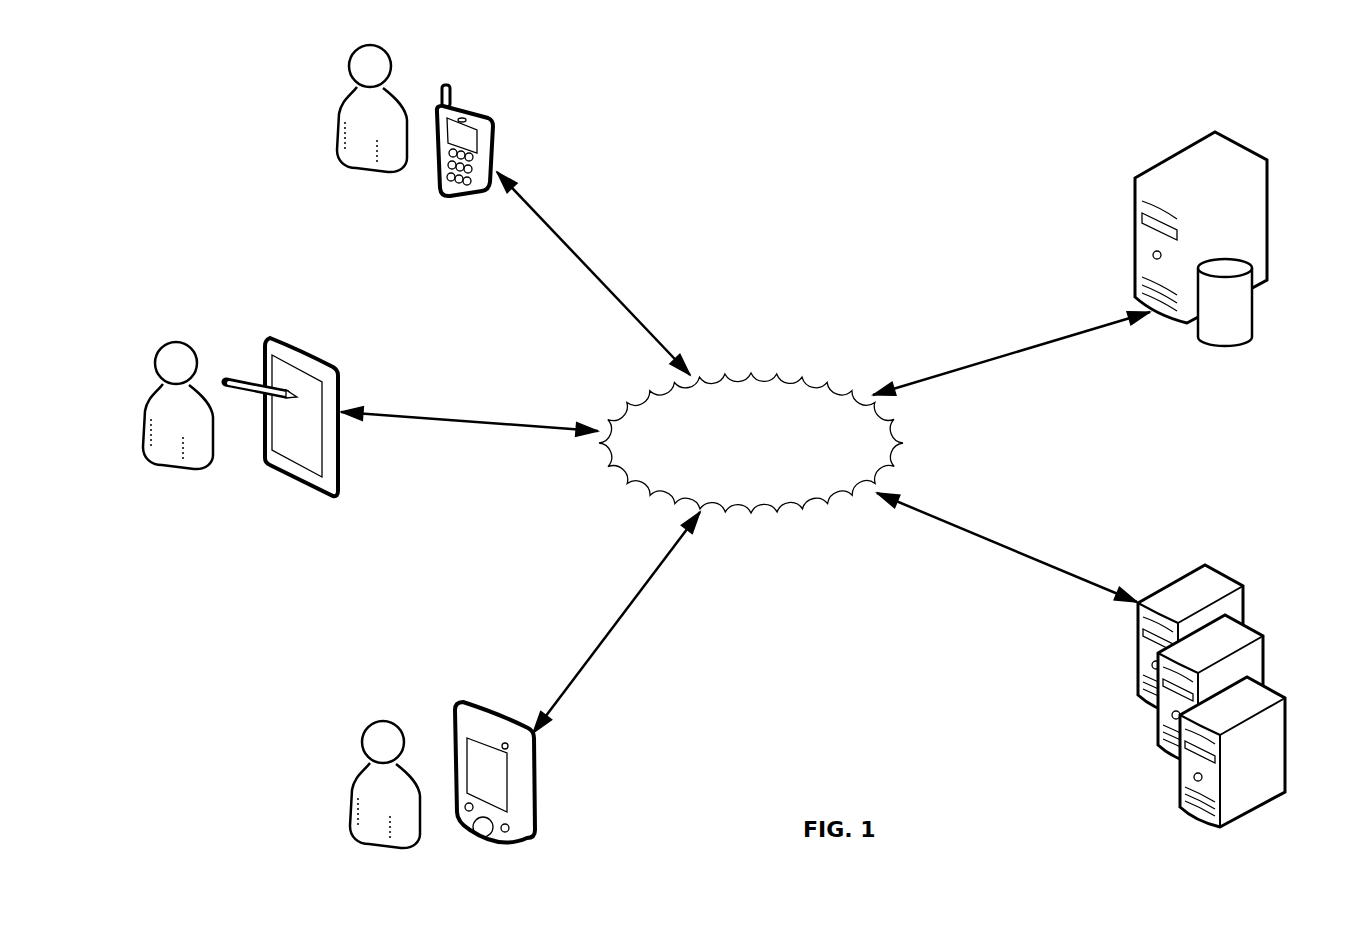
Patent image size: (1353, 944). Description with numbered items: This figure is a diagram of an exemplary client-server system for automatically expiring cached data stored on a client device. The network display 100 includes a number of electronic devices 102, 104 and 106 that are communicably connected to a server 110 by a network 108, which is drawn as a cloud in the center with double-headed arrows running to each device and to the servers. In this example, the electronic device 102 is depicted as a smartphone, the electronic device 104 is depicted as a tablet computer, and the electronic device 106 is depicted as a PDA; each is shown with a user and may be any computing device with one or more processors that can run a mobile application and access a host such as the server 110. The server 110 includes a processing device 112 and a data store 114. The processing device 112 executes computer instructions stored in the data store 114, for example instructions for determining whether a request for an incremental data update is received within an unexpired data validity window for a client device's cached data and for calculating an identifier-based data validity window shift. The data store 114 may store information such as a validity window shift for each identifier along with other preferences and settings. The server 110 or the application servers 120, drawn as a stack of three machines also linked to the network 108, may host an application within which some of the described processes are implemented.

The network display 100 is at (884, 88).
The electronic device 102 is at (478, 108).
The electronic device 104 is at (303, 348).
The electronic device 106 is at (487, 703).
The network 108 is at (752, 372).
The server 110 is at (1130, 352).
The processing device 112 is at (1240, 142).
The data store 114 is at (1253, 320).
The application servers 120 is at (1126, 797).